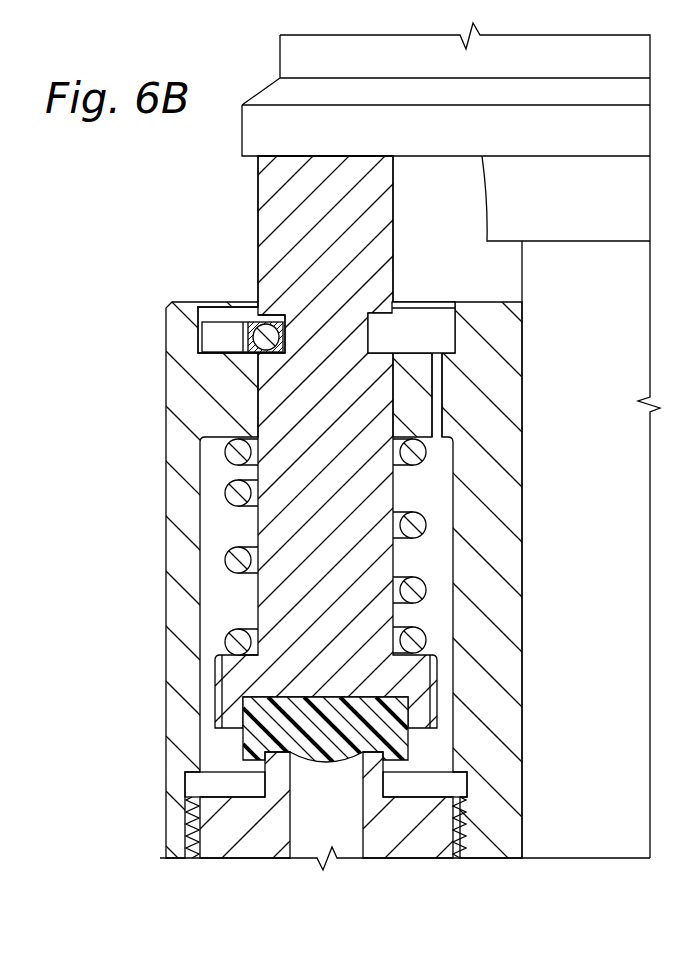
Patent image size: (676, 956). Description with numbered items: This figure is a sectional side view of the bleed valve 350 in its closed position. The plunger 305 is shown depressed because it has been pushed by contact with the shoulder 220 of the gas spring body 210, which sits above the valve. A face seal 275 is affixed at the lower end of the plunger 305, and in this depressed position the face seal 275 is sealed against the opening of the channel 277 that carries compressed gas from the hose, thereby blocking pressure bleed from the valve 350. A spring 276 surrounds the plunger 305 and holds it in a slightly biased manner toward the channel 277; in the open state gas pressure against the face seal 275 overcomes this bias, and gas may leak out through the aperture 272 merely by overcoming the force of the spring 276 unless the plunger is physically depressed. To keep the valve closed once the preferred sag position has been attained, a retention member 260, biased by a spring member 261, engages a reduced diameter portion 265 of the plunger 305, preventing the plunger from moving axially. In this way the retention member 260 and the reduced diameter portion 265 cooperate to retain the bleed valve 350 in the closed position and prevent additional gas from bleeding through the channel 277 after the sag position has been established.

The gas spring body 210 is at (280, 58).
The shoulder 220 is at (537, 157).
The plunger 305 is at (258, 195).
The retention member 260 is at (245, 322).
The spring member 261 is at (220, 335).
The reduced diameter portion 265 is at (370, 343).
The aperture 272 is at (438, 402).
The spring 276 is at (242, 555).
The bleed valve 350 is at (166, 660).
The face seal 275 is at (243, 748).
The channel 277 is at (313, 823).